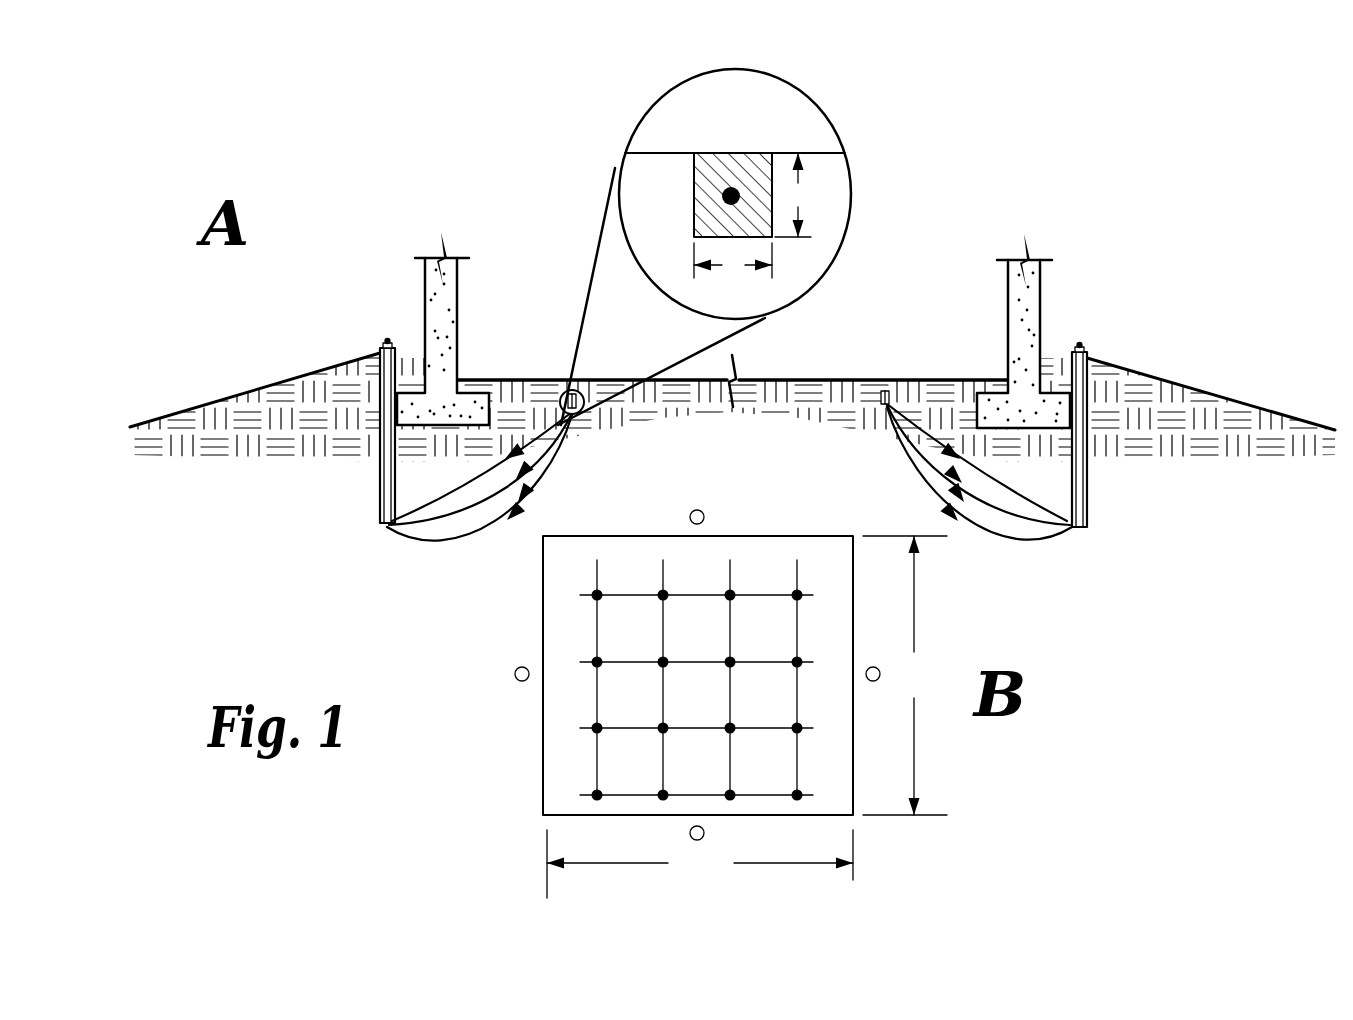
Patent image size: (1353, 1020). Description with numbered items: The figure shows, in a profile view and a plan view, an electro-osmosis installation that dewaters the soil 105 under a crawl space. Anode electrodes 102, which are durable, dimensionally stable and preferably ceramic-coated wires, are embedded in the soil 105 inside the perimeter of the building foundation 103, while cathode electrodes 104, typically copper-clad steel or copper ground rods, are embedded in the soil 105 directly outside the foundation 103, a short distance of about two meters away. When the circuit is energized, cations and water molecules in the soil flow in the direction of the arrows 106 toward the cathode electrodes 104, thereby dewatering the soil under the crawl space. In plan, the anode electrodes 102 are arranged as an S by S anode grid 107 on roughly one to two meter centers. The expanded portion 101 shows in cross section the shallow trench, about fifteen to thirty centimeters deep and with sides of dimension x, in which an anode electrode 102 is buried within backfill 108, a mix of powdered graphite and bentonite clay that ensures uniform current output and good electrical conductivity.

The expanded portion 101 is at (617, 176).
The anode electrode 102 is at (740, 190).
The foundation 103 is at (423, 270).
The cathode electrode 104 is at (385, 345).
The soil 105 is at (252, 394).
The arrows 106 is at (542, 482).
The anode grid 107 is at (514, 554).
The backfill 108 is at (702, 158).